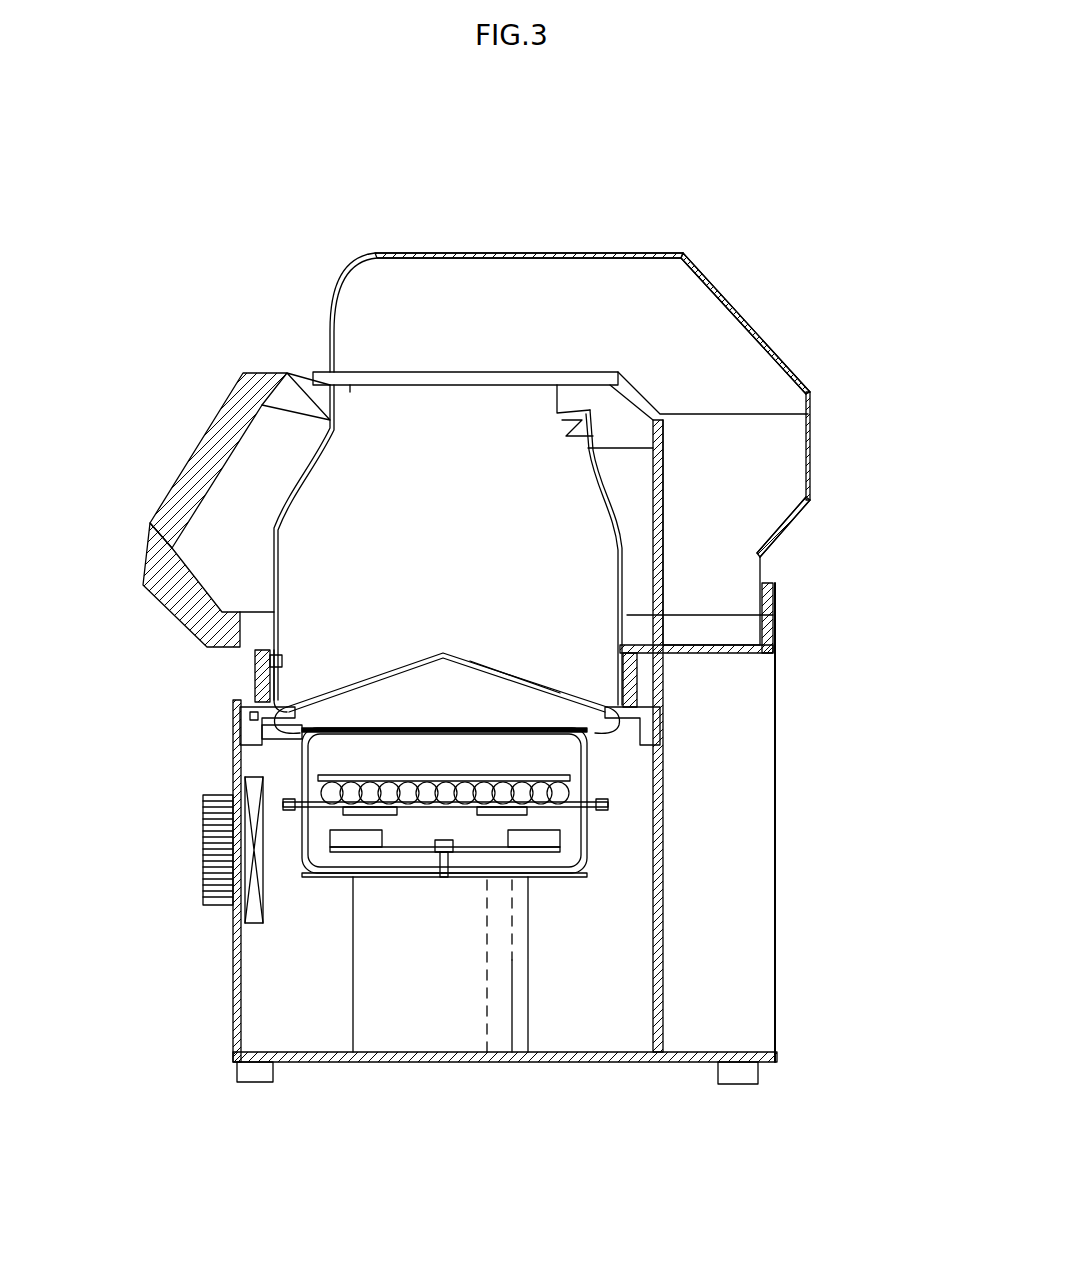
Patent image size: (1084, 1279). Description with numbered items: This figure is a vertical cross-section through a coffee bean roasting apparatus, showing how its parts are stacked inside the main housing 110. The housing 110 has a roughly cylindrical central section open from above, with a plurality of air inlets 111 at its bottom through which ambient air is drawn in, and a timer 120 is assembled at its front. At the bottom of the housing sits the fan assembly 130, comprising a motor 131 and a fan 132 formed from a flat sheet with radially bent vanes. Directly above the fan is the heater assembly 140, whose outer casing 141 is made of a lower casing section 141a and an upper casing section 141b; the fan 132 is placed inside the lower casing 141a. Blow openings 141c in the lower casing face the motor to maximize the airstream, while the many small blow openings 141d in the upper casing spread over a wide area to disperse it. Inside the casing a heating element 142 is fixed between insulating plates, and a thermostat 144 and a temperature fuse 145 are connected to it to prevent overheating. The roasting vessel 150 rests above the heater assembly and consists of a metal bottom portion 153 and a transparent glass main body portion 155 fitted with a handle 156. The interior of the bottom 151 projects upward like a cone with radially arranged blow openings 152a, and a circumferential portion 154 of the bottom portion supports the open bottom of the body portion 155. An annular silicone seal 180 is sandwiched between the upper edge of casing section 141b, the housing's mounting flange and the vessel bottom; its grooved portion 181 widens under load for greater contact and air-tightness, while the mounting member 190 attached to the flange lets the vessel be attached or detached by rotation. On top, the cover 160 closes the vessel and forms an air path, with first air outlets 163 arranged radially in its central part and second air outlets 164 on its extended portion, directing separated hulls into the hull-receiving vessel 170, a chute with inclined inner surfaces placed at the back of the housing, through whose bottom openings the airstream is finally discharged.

The main housing 110 is at (788, 951).
The air inlet 111 is at (298, 1063).
The timer 120 is at (175, 862).
The fan assembly 130 is at (548, 1030).
The motor 131 is at (437, 1018).
The fan 132 is at (397, 845).
The heater assembly 140 is at (290, 850).
The outer casing 141 is at (763, 823).
The lower casing section 141a is at (590, 840).
The upper casing section 141b is at (590, 768).
The blow openings 141c is at (415, 877).
The blow openings 141d is at (433, 735).
The heating element 142 is at (460, 775).
The thermostat 144 is at (290, 855).
The temperature fuse 145 is at (583, 817).
The roasting vessel 150 is at (285, 338).
The bottom 151 is at (443, 650).
The blow openings 152a is at (495, 680).
The bottom portion 153 is at (625, 673).
The circumferential portion 154 is at (272, 657).
The main body portion 155 is at (775, 615).
The handle 156 is at (190, 487).
The cover 160 is at (330, 245).
The first air outlets 163 is at (757, 330).
The second air outlets 164 is at (795, 530).
The hull-receiving vessel 170 is at (836, 456).
The seal 180 is at (240, 705).
The grooved portion 181 is at (268, 727).
The mounting member 190 is at (240, 668).